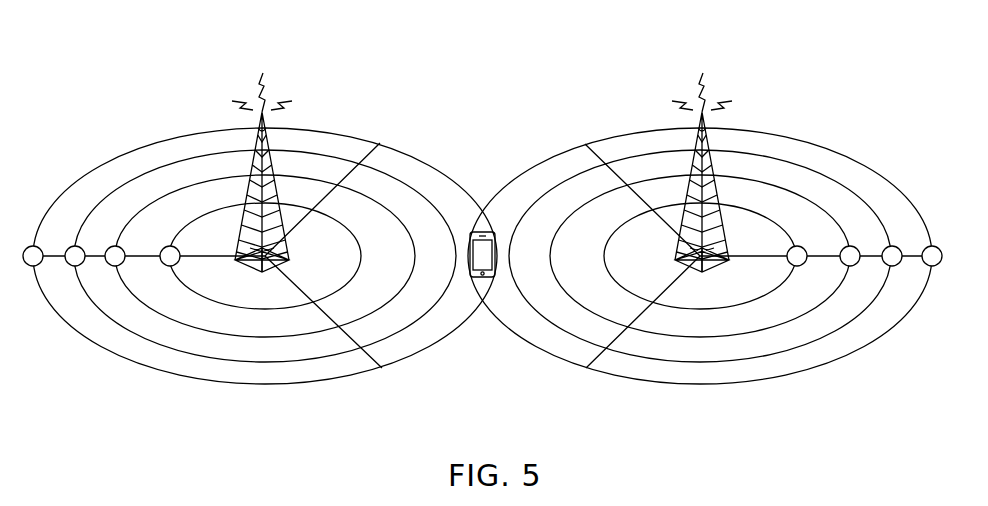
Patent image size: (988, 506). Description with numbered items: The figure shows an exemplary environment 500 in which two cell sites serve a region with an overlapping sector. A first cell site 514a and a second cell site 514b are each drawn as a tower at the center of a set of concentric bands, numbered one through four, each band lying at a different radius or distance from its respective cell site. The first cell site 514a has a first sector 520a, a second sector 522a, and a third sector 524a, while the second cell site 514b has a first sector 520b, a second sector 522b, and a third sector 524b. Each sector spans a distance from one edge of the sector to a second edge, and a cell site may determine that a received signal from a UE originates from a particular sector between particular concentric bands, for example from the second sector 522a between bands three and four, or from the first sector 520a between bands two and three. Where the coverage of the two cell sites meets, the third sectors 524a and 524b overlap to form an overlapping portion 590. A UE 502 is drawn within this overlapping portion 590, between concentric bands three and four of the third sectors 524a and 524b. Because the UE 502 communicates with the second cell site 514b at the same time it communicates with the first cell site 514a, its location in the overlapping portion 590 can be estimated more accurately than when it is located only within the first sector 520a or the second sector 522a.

The exemplary environment 500 is at (106, 75).
The UE 502 is at (468, 249).
The first cell site 514a is at (243, 217).
The second cell site 514b is at (721, 217).
The first sector 520a is at (260, 256).
The first sector 520b is at (705, 257).
The second sector 522a is at (215, 384).
The second sector 522b is at (749, 388).
The third sector 524a is at (412, 151).
The third sector 524b is at (530, 351).
The overlapping portion 590 is at (485, 289).